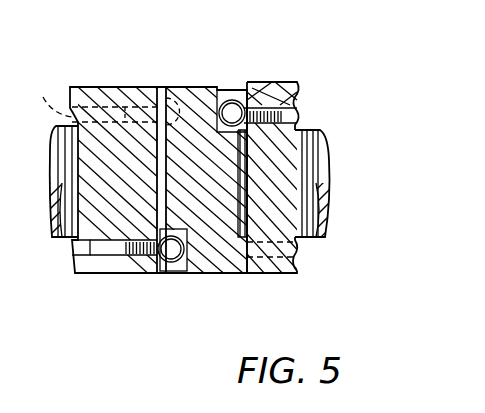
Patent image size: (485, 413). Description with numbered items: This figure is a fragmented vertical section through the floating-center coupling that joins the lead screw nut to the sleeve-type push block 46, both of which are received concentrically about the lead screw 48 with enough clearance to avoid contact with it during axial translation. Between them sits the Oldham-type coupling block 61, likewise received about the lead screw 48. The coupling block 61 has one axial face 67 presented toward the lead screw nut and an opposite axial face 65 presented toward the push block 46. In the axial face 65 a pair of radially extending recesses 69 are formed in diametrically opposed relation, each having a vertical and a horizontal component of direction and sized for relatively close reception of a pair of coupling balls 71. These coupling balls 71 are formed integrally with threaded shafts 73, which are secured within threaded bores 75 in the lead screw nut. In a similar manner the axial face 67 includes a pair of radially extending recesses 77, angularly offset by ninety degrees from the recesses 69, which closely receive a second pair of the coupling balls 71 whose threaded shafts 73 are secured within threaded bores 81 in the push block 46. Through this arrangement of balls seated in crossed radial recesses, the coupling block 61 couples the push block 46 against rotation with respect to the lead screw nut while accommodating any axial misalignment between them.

The push block 46 is at (90, 90).
The lead screw 48 is at (325, 152).
The coupling block 61 is at (187, 88).
The axial face 65 is at (243, 275).
The axial face 67 is at (163, 87).
The recesses 69 is at (233, 108).
The coupling balls 71 is at (257, 110).
The threaded shafts 73 is at (110, 274).
The threaded bores 75 is at (297, 115).
The recesses 77 is at (175, 271).
The threaded bores 81 is at (90, 252).